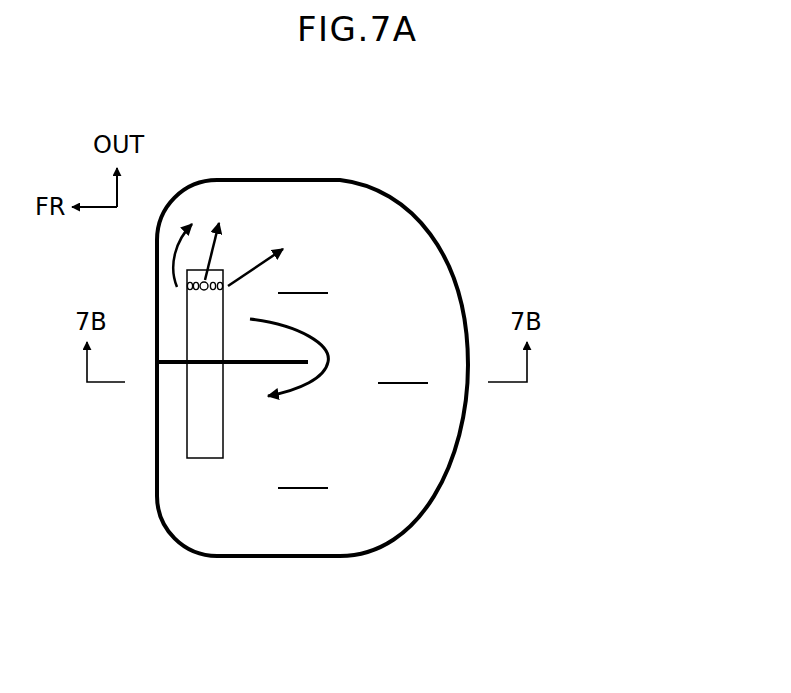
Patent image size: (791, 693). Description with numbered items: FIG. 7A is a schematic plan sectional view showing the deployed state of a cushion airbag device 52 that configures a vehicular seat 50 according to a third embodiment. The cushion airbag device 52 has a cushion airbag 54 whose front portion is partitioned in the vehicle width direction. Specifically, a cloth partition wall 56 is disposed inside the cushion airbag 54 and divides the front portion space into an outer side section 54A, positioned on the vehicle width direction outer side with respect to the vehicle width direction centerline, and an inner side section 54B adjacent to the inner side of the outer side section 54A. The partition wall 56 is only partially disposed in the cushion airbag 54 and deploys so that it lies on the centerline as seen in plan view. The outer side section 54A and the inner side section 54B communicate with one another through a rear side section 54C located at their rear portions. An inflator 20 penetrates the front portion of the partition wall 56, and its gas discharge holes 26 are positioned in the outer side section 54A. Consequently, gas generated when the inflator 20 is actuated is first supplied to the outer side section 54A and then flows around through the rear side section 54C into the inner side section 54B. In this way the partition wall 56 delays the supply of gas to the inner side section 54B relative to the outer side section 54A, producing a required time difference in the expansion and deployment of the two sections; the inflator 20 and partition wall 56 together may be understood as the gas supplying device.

The inflator 20 is at (203, 448).
The gas discharge holes 26 is at (215, 280).
The vehicular seat 50 is at (360, 314).
The cushion airbag device 52 is at (360, 314).
The cushion airbag 54 is at (298, 198).
The outer side section 54A is at (303, 280).
The inner side section 54B is at (303, 475).
The rear side section 54C is at (403, 370).
The partition wall 56 is at (243, 364).